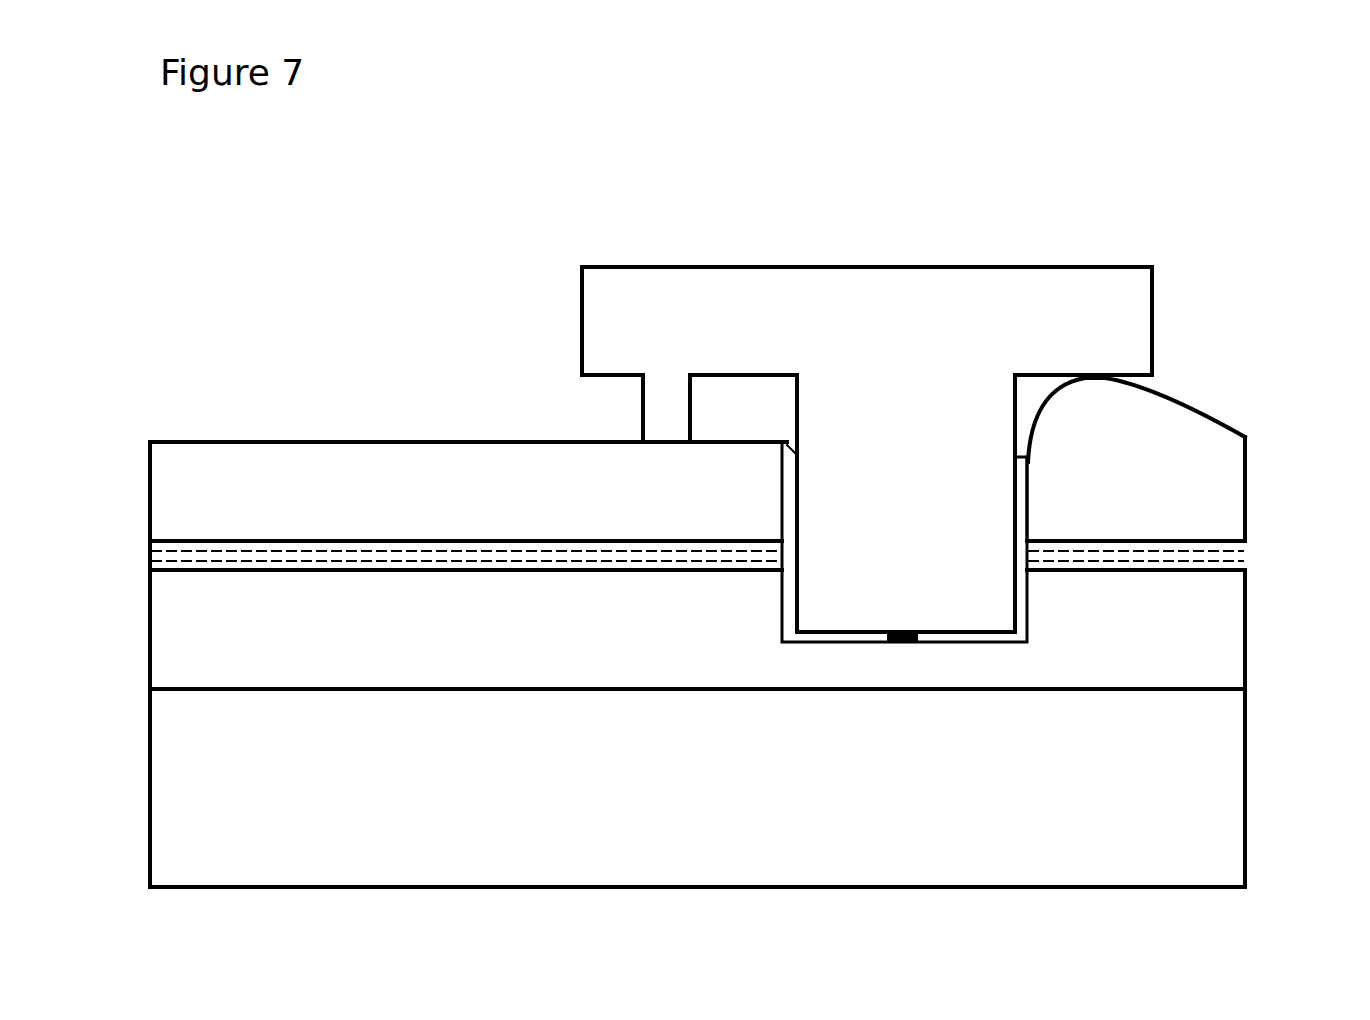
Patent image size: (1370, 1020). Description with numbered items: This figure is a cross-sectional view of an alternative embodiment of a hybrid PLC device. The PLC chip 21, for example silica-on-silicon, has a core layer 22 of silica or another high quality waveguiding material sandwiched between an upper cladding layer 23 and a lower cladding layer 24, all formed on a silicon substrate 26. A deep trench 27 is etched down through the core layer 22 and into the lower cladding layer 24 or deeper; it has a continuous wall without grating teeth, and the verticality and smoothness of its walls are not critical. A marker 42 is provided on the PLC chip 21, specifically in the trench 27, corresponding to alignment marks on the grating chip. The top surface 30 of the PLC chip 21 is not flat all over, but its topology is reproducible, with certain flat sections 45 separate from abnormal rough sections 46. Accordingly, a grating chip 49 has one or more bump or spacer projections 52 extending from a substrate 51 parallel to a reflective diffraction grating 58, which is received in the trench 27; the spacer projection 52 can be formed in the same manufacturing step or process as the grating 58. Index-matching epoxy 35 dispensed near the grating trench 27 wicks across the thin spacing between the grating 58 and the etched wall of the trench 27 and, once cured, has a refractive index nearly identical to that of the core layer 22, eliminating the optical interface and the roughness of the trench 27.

The PLC chip 21 is at (225, 442).
The core layer 22 is at (150, 541).
The upper cladding layer 23 is at (697, 489).
The lower cladding layer 24 is at (697, 629).
The silicon substrate 26 is at (697, 788).
The trench 27 is at (1020, 612).
The upper surface 30 is at (345, 440).
The index-matching epoxy 35 is at (1018, 487).
The markers 42 is at (905, 642).
The flat sections 45 is at (598, 440).
The rough sections 46 is at (1138, 392).
The grating chip 49 is at (656, 268).
The substrate 51 is at (867, 321).
The spacer projection 52 is at (660, 408).
The reflective diffraction grating 58 is at (906, 503).